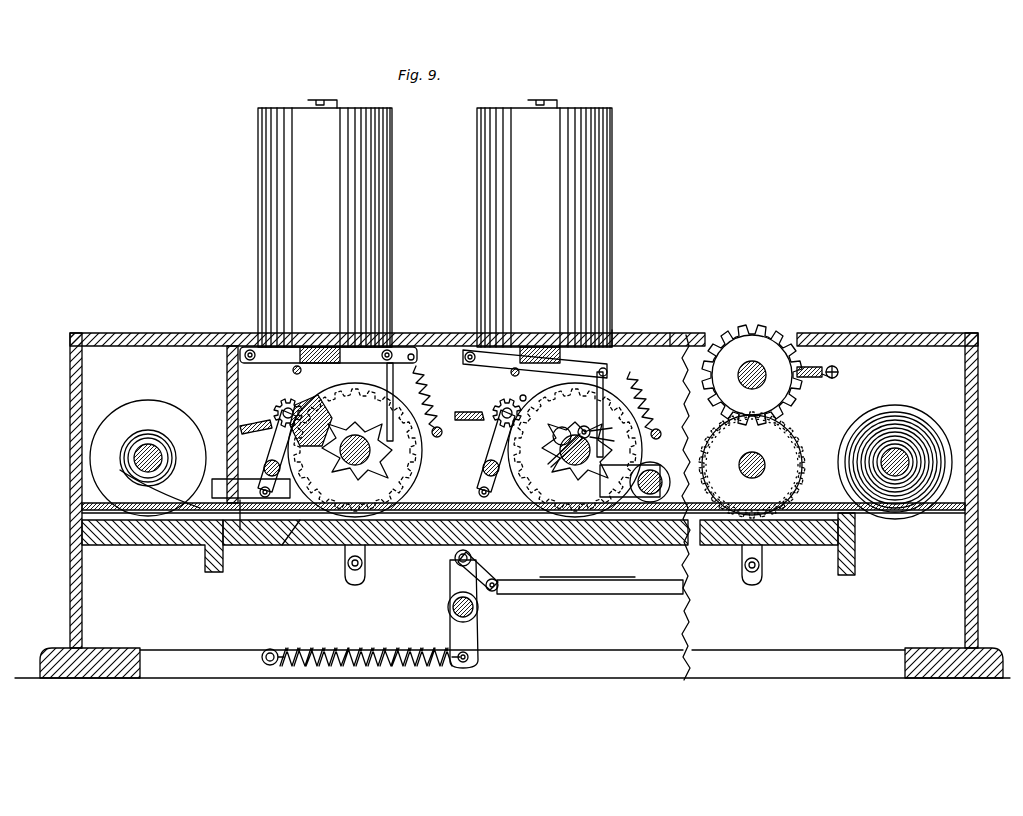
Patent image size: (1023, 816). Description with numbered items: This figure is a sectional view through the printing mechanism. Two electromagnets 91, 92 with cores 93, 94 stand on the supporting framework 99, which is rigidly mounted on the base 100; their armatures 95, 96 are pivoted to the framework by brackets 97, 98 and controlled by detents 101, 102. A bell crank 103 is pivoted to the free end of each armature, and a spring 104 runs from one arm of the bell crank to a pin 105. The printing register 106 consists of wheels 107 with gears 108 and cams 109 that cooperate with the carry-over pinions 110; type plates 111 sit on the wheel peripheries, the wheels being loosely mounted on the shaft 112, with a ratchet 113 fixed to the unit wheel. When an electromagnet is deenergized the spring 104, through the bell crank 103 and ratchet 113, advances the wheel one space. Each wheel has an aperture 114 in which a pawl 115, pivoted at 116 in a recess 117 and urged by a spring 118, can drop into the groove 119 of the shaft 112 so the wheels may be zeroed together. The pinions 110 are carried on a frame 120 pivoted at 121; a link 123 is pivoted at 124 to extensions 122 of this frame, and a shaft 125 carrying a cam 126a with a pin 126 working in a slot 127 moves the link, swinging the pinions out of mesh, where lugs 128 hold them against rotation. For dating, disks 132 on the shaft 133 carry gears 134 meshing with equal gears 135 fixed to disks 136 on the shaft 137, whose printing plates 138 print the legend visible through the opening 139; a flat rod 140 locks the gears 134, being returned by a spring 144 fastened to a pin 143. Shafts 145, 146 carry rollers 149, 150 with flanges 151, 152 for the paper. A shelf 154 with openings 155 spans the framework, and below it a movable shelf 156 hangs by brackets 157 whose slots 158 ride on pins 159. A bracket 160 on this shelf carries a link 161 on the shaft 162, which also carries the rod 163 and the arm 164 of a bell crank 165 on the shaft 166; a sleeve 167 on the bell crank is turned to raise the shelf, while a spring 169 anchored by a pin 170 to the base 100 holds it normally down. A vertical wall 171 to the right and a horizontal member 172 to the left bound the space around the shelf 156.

The electromagnet 91 is at (258, 170).
The electromagnet 92 is at (612, 190).
The core 93 is at (305, 345).
The core 94 is at (612, 333).
The armature 95 is at (300, 352).
The armature 96 is at (500, 350).
The bracket 97 is at (245, 355).
The bracket 98 is at (463, 357).
The supporting framework 99 is at (122, 335).
The base 100 is at (100, 678).
The detent 101 is at (293, 370).
The detent 102 is at (512, 373).
The bell crank 103 is at (386, 371).
The spring 104 is at (428, 386).
The pin 105 is at (437, 437).
The printing register 106 is at (286, 545).
The wheel 107 is at (525, 388).
The gear 108 is at (416, 462).
The cam 109 is at (312, 400).
The pinion 110 is at (285, 405).
The type plate 111 is at (411, 354).
The shaft 112 is at (355, 466).
The ratchet 113 is at (475, 451).
The aperture 114 is at (560, 424).
The pawl 115 is at (585, 421).
The pivot 116 is at (615, 441).
The recess 117 is at (614, 425).
The spring 118 is at (553, 436).
The groove 119 is at (550, 466).
The frame 120 is at (278, 438).
The pivot 121 is at (392, 491).
The extension 122 is at (476, 491).
The link 123 is at (446, 500).
The pivotal connection 124 is at (260, 490).
The shaft 125 is at (652, 465).
The pin 126 is at (632, 488).
The cam 126a is at (701, 507).
The slot 127 is at (656, 428).
The lug 128 is at (245, 424).
The disk 132 is at (110, 436).
The shaft 133 is at (750, 345).
The gear 134 is at (786, 340).
The gear 135 is at (790, 424).
The disk 136 is at (798, 436).
The shaft 137 is at (742, 460).
The printing plate 138 is at (790, 420).
The opening 139 is at (752, 372).
The flat rod 140 is at (817, 364).
The pin 143 is at (839, 372).
The spring 144 is at (824, 378).
The shaft 145 is at (910, 440).
The shaft 146 is at (120, 455).
The roller 149 is at (905, 466).
The roller 150 is at (138, 466).
The flange 151 is at (900, 412).
The flange 152 is at (912, 455).
The shelf 154 is at (668, 500).
The opening 155 is at (616, 500).
The movable shelf 156 is at (248, 545).
The bracket 157 is at (355, 585).
The slot 158 is at (352, 568).
The pin 159 is at (360, 567).
The bracket 160 is at (458, 566).
The link 161 is at (486, 588).
The shaft 162 is at (499, 586).
The rod 163 is at (617, 594).
The arm 164 is at (480, 612).
The bell crank 165 is at (448, 612).
The shaft 166 is at (453, 606).
The sleeve 167 is at (470, 656).
The spring 169 is at (348, 650).
The pin 170 is at (270, 649).
The vertical wall 171 is at (855, 540).
The horizontal member 172 is at (140, 545).